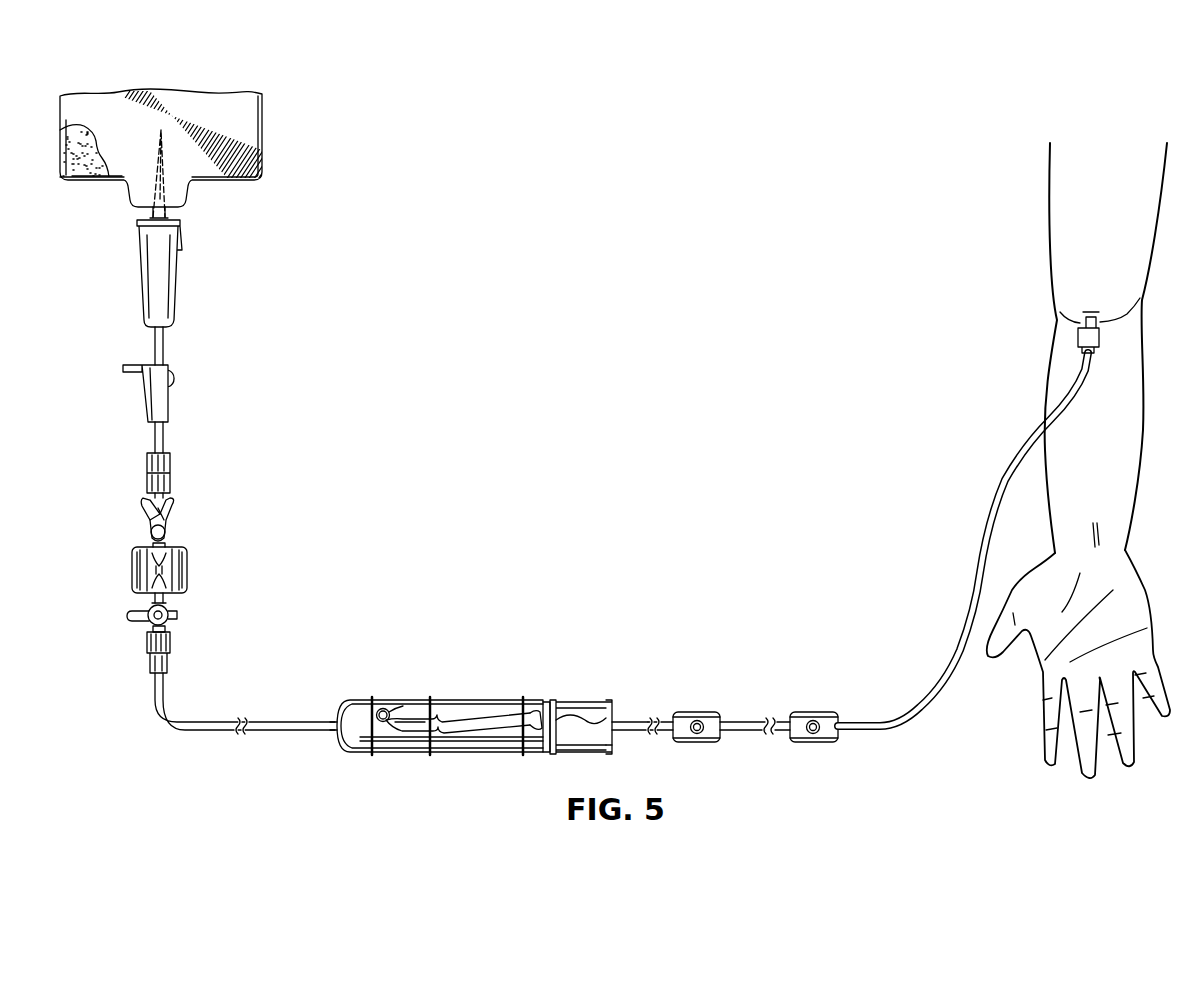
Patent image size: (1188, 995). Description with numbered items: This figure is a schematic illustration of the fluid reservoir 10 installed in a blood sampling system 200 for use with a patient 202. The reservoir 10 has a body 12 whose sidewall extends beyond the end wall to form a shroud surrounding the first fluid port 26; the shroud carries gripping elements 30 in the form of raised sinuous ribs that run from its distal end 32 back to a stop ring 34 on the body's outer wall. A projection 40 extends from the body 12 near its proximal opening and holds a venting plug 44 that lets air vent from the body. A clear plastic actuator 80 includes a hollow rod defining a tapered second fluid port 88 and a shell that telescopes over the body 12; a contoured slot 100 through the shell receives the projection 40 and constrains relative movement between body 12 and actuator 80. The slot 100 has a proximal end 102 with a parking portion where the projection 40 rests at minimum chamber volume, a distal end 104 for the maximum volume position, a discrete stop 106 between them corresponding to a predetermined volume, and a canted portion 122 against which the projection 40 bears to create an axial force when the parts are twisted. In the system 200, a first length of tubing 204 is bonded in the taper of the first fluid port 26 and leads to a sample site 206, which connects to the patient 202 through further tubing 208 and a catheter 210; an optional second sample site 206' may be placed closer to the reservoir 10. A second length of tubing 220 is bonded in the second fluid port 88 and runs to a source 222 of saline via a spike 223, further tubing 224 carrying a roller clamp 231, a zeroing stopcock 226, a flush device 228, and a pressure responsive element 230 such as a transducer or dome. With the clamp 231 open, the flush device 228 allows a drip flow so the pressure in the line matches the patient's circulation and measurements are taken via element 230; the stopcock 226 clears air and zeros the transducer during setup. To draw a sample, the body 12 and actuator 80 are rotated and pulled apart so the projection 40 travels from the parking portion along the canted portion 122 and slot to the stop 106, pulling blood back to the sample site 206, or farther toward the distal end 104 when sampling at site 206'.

The reservoir 10 is at (445, 656).
The body 12 is at (582, 700).
The first fluid port 26 is at (628, 720).
The gripping elements 30 is at (577, 753).
The distal end 32 is at (614, 742).
The stop ring 34 is at (553, 705).
The projection 40 is at (410, 697).
The venting plug 44 is at (382, 707).
The actuator 80 is at (438, 697).
The second fluid port 88 is at (330, 735).
The slot 100 is at (482, 742).
The proximal end 102 is at (343, 708).
The distal end 104 is at (529, 712).
The stop 106 is at (443, 730).
The canted portion 122 is at (386, 732).
The blood sampling system 200 is at (590, 270).
The patient 202 is at (1023, 374).
The first length of tubing 204 is at (647, 718).
The sample site 206 is at (805, 708).
The second sample site 206' is at (703, 708).
The further tubing 208 is at (980, 554).
The catheter 210 is at (1078, 333).
The second length of tubing 220 is at (262, 722).
The source of fluid 222 is at (264, 105).
The spike 223 is at (146, 292).
The further tubing 224 is at (165, 437).
The zeroing stopcock 226 is at (172, 613).
The flush device 228 is at (175, 517).
The pressure responsive element 230 is at (132, 588).
The roller clamp 231 is at (178, 372).